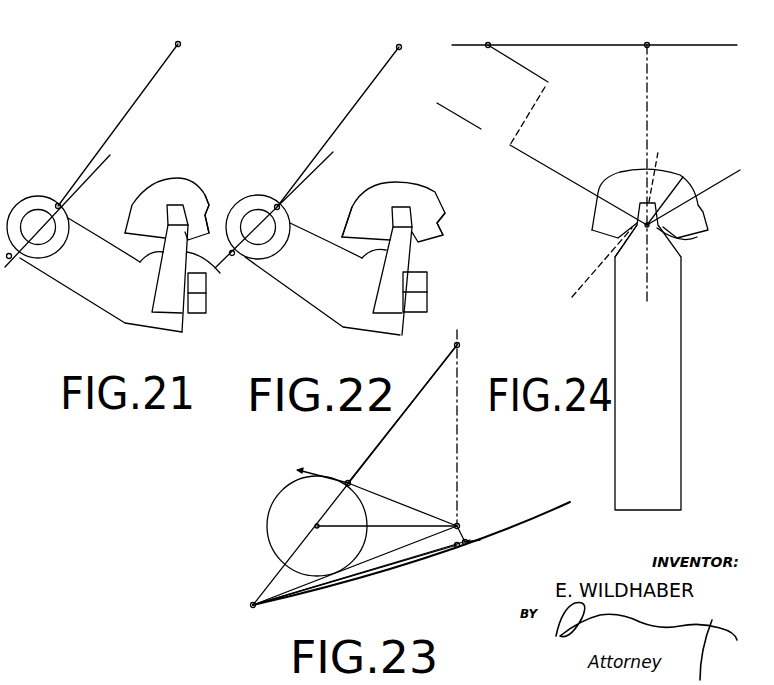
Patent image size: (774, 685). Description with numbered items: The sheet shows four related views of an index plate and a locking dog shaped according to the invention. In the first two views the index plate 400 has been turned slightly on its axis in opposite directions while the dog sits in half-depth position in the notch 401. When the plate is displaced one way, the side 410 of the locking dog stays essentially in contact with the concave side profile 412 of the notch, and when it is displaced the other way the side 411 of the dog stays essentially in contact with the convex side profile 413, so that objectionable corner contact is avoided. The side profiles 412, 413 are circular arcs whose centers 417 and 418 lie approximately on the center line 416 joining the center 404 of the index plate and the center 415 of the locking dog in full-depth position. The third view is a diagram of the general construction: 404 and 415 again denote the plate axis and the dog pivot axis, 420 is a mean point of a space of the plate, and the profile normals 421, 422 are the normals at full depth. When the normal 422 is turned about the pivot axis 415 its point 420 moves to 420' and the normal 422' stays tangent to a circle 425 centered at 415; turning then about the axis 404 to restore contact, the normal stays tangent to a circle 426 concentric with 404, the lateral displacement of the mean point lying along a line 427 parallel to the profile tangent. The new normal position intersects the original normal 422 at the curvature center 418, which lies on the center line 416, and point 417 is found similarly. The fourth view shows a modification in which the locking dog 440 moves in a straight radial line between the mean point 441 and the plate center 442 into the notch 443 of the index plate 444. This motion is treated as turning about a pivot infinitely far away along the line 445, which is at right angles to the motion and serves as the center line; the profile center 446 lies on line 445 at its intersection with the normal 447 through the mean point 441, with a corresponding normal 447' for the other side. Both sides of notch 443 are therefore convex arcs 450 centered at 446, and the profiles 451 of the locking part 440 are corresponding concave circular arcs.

In FIG. 22, the index plate 400 is at (363, 207).
In FIG. 21, the notch 401 is at (171, 205).
In FIG. 22, the notch 401 is at (403, 210).
In FIG. 21, the center of index plate 404 is at (142, 115).
In FIG. 22, the center of index plate 404 is at (344, 116).
In FIG. 23, the center of index plate 404 is at (378, 466).
In FIG. 22, the side of locking dog 410 is at (272, 222).
In FIG. 21, the side of locking dog 411 is at (166, 266).
In FIG. 22, the side of locking dog 411 is at (365, 255).
In FIG. 21, the side profile of notch 412 is at (186, 212).
In FIG. 22, the side profile of notch 412 is at (438, 229).
In FIG. 21, the side profile of notch 413 is at (160, 212).
In FIG. 22, the side profile of notch 413 is at (388, 220).
In FIG. 21, the center of locking dog 415 is at (38, 208).
In FIG. 23, the center of locking dog 415 is at (316, 525).
In FIG. 23, the center line 416 is at (377, 448).
In FIG. 23, the center of circular arc 417 is at (372, 473).
In FIG. 23, the center of circular arc 418 is at (228, 598).
In FIG. 23, the mean point 420 is at (479, 510).
In FIG. 23, the displaced position of mean point 420' is at (452, 561).
In FIG. 23, the profile normal 421 is at (387, 497).
In FIG. 23, the profile normal 422 is at (355, 565).
In FIG. 23, the displaced position of normal 422' is at (355, 580).
In FIG. 23, the circle 425 is at (301, 473).
In FIG. 23, the circle 426 is at (545, 513).
In FIG. 23, the line 427 is at (467, 550).
In FIG. 24, the locking dog 440 is at (660, 315).
In FIG. 24, the mean point 441 is at (688, 236).
In FIG. 24, the center of index plate 442 is at (668, 162).
In FIG. 24, the notch 443 is at (663, 150).
In FIG. 24, the index plate 444 is at (618, 187).
In FIG. 24, the center line 445 is at (617, 45).
In FIG. 24, the profile center 446 is at (517, 51).
In FIG. 24, the normal 447 is at (578, 173).
In FIG. 24, the normal 447' is at (705, 197).
In FIG. 24, the convex arcs 450 is at (617, 240).
In FIG. 24, the profiles of locking part 451 is at (591, 262).